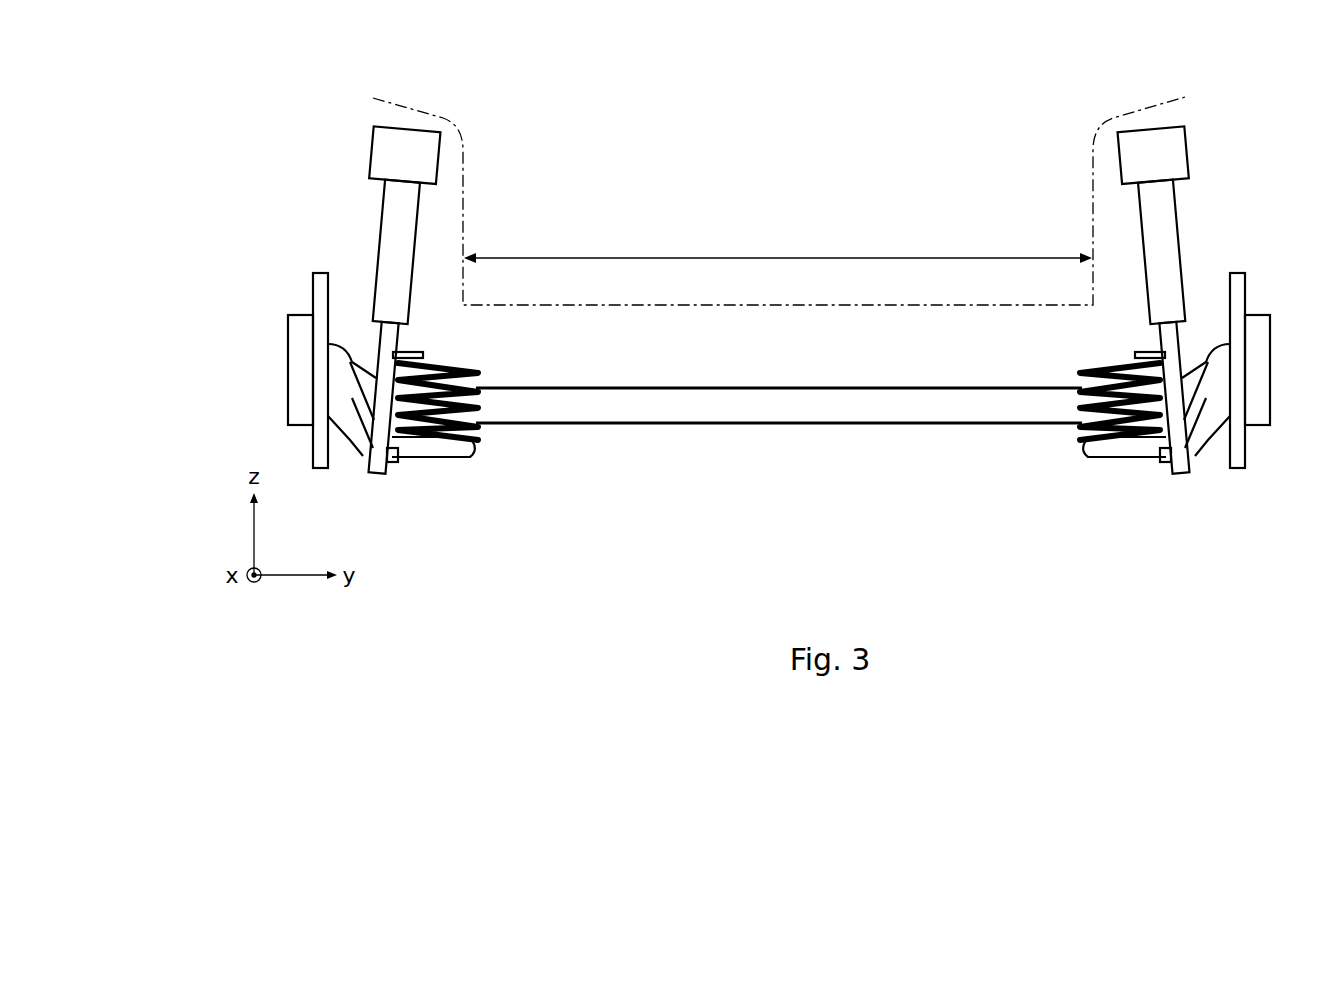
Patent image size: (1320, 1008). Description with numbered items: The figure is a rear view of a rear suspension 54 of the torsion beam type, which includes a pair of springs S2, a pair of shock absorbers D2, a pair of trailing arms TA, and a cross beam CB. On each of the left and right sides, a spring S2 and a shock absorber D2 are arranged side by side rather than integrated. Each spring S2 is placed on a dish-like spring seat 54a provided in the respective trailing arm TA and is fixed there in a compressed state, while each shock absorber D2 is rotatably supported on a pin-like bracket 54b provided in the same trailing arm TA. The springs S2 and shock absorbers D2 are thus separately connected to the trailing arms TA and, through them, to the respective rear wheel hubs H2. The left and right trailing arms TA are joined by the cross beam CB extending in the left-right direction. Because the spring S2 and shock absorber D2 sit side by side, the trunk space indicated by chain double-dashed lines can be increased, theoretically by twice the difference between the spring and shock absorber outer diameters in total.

The rear suspension 54 is at (976, 126).
The spring seat 54a is at (488, 450).
The bracket 54b is at (400, 463).
The shock absorber D2 is at (398, 140).
The spring S2 is at (441, 368).
The rear wheel hub H2 is at (302, 318).
The trailing arm TA is at (357, 448).
The cross beam CB is at (755, 400).